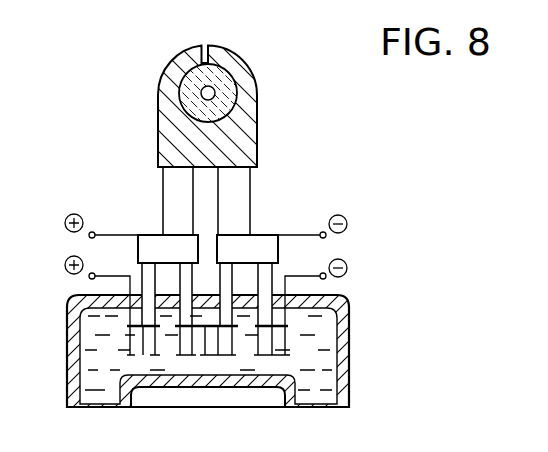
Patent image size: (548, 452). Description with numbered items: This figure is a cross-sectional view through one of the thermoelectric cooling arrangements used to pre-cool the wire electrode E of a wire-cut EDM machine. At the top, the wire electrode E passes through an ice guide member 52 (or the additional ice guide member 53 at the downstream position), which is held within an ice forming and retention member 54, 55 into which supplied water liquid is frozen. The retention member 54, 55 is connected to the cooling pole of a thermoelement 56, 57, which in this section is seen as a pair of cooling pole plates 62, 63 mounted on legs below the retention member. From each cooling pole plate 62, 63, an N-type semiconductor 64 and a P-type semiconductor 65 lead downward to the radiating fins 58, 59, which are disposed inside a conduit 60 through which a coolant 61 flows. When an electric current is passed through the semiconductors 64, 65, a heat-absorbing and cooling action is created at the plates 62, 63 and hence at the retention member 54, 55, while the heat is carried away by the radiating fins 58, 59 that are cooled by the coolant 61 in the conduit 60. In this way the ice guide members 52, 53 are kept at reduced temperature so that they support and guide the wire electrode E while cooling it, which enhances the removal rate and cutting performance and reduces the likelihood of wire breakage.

The ice guide member 52 is at (226, 88).
The additional ice guide member 53 is at (228, 80).
The ice forming and retention member 54 is at (196, 105).
The ice forming and retention member 55 is at (248, 119).
The thermoelement 56 is at (297, 190).
The thermoelement 57 is at (313, 173).
The radiating fin 58 is at (236, 340).
The radiating fin 59 is at (282, 338).
The conduit 60 is at (82, 347).
The coolant 61 is at (98, 398).
The cooling pole plate 62 is at (150, 246).
The cooling pole plate 63 is at (260, 244).
The N-type semiconductor 64 is at (187, 272).
The P-type semiconductor 65 is at (228, 275).
The wire electrode E is at (201, 93).